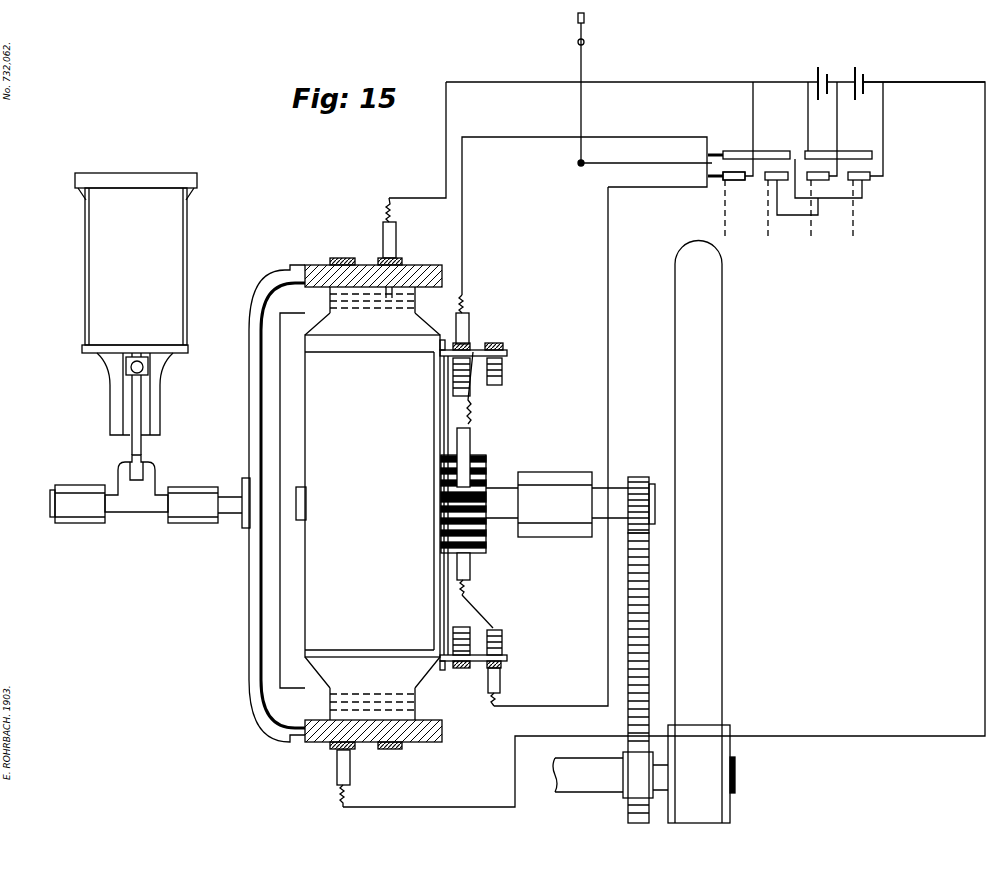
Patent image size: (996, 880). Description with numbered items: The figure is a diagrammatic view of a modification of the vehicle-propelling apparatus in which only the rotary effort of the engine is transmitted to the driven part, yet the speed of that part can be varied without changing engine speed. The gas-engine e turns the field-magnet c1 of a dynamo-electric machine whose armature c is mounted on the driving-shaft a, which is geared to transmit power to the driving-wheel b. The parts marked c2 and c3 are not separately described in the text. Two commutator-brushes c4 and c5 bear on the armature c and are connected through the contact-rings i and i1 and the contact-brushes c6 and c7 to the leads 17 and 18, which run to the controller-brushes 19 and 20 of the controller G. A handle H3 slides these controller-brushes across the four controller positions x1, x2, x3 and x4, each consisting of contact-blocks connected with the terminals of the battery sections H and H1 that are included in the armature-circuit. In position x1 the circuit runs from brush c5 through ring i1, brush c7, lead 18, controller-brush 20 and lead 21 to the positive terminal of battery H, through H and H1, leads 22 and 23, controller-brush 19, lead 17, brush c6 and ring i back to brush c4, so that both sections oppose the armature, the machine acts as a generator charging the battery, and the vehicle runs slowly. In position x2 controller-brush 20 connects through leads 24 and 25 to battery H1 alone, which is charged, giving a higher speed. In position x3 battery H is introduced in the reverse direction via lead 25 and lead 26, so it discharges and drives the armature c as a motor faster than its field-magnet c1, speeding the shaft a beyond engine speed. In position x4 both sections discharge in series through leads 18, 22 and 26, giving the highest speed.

The gas-engine e is at (115, 309).
The armature c is at (368, 503).
The field-magnet c1 is at (455, 762).
The upper terminal c2 is at (396, 233).
The lower terminal c3 is at (337, 775).
The commutator-brush c4 is at (471, 443).
The commutator-brush c5 is at (472, 567).
The contact-brush c6 is at (467, 322).
The contact-brush c7 is at (496, 693).
The contact-ring i is at (452, 347).
The contact-ring i1 is at (505, 345).
The driving-shaft a is at (500, 500).
The driving-wheel b is at (700, 418).
The battery H is at (822, 73).
The battery H1 is at (860, 70).
The handle H3 is at (584, 37).
The controller G is at (895, 170).
The lead 17 is at (465, 148).
The lead 18 is at (608, 266).
The controller-brush 19 is at (712, 150).
The controller-brush 20 is at (713, 182).
The lead 21 is at (756, 122).
The lead 22 is at (886, 122).
The lead 23 is at (862, 198).
The lead 24 is at (818, 215).
The lead 25 is at (840, 122).
The lead 26 is at (806, 122).
The controller position x1 is at (736, 214).
The controller position x2 is at (778, 214).
The controller position x3 is at (820, 214).
The controller position x4 is at (862, 214).